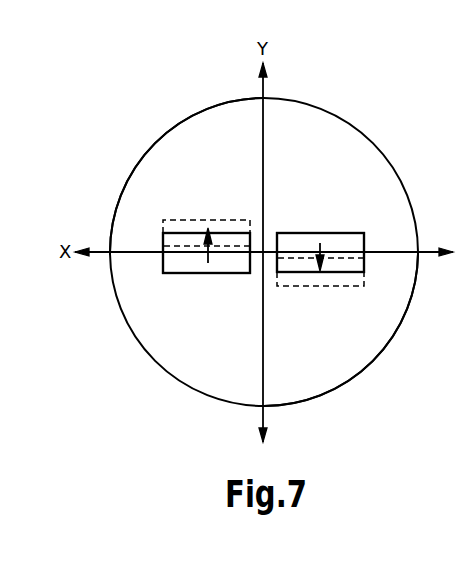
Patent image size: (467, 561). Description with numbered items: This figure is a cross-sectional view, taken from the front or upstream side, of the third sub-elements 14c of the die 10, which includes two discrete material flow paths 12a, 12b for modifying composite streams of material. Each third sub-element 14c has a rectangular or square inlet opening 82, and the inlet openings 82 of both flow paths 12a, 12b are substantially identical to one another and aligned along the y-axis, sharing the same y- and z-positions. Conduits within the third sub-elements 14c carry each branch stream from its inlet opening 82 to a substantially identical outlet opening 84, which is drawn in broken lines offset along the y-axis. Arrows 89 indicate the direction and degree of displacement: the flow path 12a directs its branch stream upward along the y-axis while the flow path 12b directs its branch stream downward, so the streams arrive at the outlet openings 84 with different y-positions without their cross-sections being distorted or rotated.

The die 10 is at (117, 86).
The material flow path 12a is at (141, 310).
The material flow path 12b is at (338, 319).
The third sub-element 14c is at (222, 274).
The inlet openings 82 is at (186, 274).
The outlet openings 84 is at (187, 218).
The arrows 89 is at (210, 232).